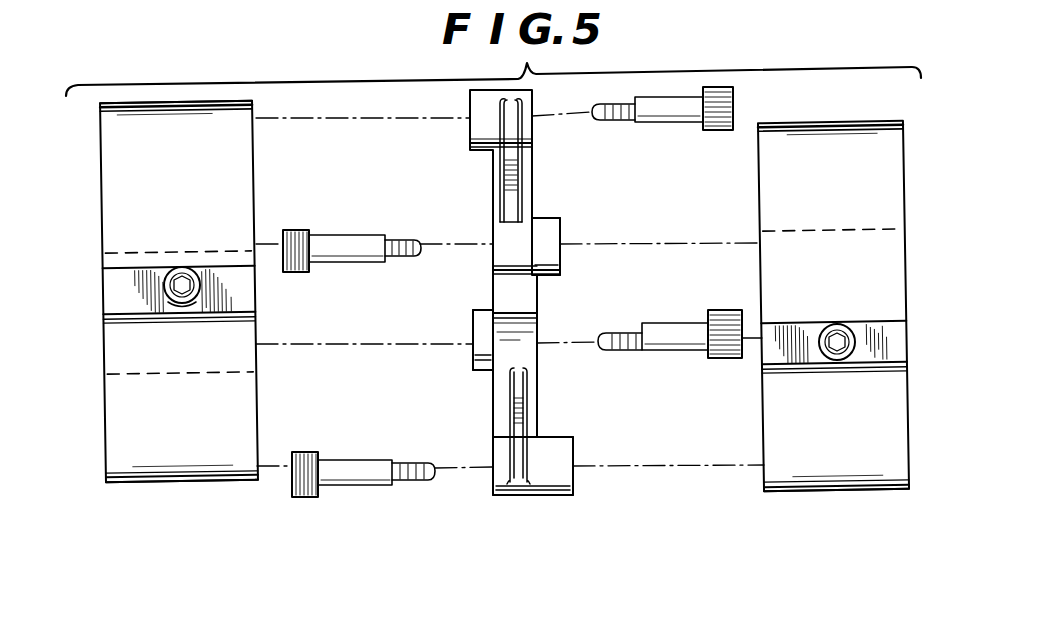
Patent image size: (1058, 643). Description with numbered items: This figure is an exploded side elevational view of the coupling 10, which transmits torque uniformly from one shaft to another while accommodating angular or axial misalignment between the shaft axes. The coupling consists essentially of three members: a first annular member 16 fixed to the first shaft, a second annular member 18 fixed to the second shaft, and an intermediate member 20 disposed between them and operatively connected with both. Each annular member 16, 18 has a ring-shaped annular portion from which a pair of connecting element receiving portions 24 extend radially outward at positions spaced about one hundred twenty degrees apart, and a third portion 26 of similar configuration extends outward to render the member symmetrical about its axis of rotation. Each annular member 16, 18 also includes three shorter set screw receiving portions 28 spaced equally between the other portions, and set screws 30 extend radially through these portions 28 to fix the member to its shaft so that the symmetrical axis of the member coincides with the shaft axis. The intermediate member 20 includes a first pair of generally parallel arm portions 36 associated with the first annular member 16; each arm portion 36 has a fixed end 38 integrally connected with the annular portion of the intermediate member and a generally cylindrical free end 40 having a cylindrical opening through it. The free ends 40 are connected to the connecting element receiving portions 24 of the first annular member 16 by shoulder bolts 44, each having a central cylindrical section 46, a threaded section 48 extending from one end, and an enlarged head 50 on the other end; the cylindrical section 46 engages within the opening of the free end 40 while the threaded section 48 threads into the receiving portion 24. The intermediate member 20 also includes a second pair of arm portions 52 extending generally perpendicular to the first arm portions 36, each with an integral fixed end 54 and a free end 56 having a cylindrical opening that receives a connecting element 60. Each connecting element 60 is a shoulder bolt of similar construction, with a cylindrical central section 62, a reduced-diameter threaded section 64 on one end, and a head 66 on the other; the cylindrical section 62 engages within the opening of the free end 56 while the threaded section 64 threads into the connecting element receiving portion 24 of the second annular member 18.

The coupling 10 is at (695, 52).
The first annular member 16 is at (212, 93).
The second annular member 18 is at (835, 108).
The intermediate member 20 is at (468, 91).
The connecting element receiving portion 24 is at (130, 133).
The third portion 26 is at (150, 468).
The set screw receiving portion 28 is at (125, 296).
The set screw 30 is at (186, 268).
The first pair of arm portions 36 is at (515, 170).
The fixed end 38 is at (525, 238).
The free end 40 is at (476, 358).
The shoulder bolt 44 is at (697, 243).
The central cylindrical section 46 is at (684, 112).
The threaded section 48 is at (612, 118).
The enlarged head 50 is at (736, 113).
The second pair of arm portions 52 is at (523, 418).
The fixed end 54 is at (527, 354).
The free end 56 is at (558, 481).
The connecting element 60 is at (363, 366).
The cylindrical central section 62 is at (360, 256).
The threaded section 64 is at (421, 238).
The head 66 is at (297, 268).